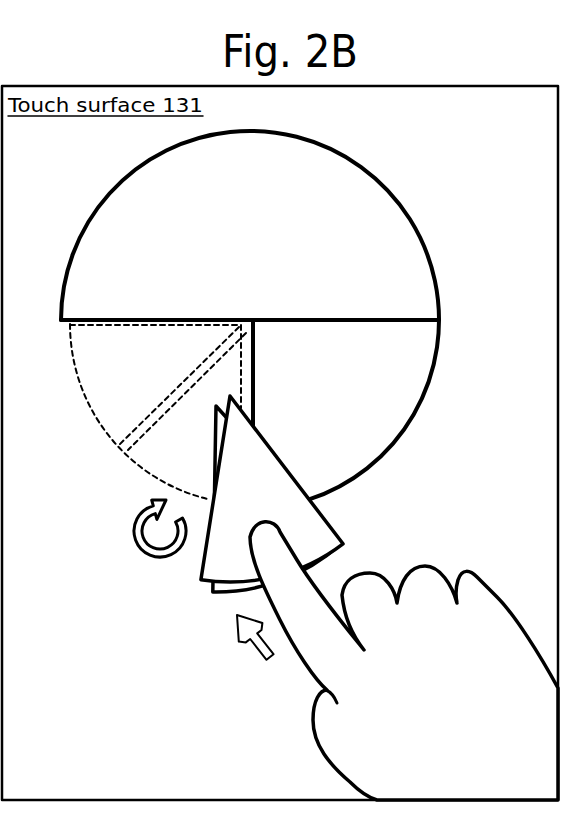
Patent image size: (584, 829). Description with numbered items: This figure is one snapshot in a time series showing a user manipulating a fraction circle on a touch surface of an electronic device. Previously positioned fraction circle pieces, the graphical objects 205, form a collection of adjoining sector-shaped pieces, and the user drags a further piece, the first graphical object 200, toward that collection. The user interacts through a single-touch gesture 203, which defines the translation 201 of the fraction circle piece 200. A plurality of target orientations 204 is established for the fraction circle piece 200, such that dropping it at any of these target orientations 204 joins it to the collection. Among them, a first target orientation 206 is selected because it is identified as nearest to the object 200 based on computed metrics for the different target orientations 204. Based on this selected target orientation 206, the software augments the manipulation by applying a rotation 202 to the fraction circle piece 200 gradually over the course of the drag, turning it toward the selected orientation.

The first graphical object 200 is at (326, 520).
The translation 201 is at (218, 647).
The rotation 202 is at (123, 530).
The single-touch gesture 203 is at (333, 760).
The plurality of target orientations 204 is at (137, 457).
The graphical objects 205 is at (438, 307).
The first target orientation 206 is at (150, 467).